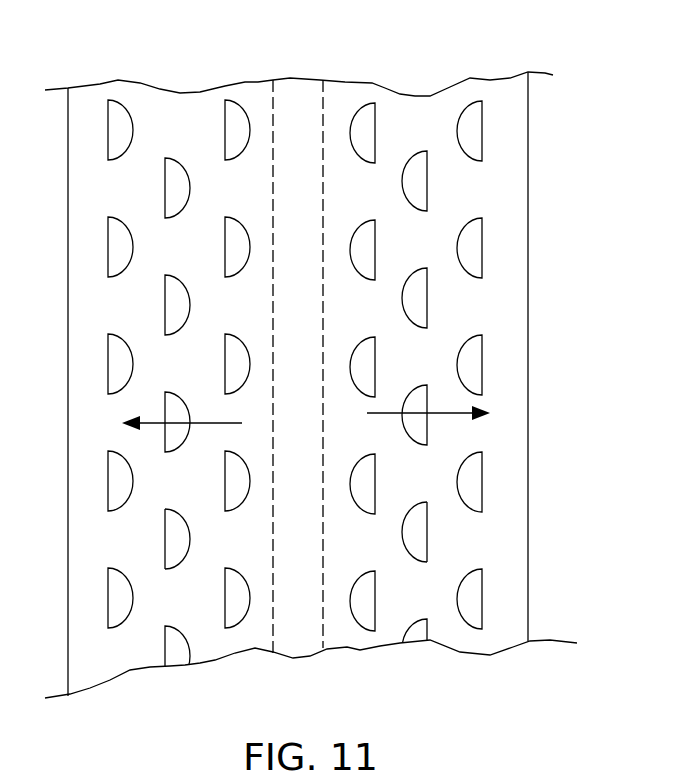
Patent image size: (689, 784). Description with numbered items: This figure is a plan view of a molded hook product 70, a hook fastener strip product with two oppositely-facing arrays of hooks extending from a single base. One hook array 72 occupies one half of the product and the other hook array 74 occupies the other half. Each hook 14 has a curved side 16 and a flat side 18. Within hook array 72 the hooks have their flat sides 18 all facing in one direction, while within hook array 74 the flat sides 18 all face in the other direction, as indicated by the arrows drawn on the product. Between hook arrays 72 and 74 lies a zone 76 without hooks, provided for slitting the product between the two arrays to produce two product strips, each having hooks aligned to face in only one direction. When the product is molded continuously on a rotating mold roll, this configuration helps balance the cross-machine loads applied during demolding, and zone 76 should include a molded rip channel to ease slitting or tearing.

The hook 14 is at (165, 297).
The curved side 16 is at (190, 538).
The flat side 18 is at (165, 540).
The molded hook product 70 is at (600, 408).
The hook array 72 is at (252, 58).
The hook array 74 is at (495, 53).
The zone 76 is at (332, 660).